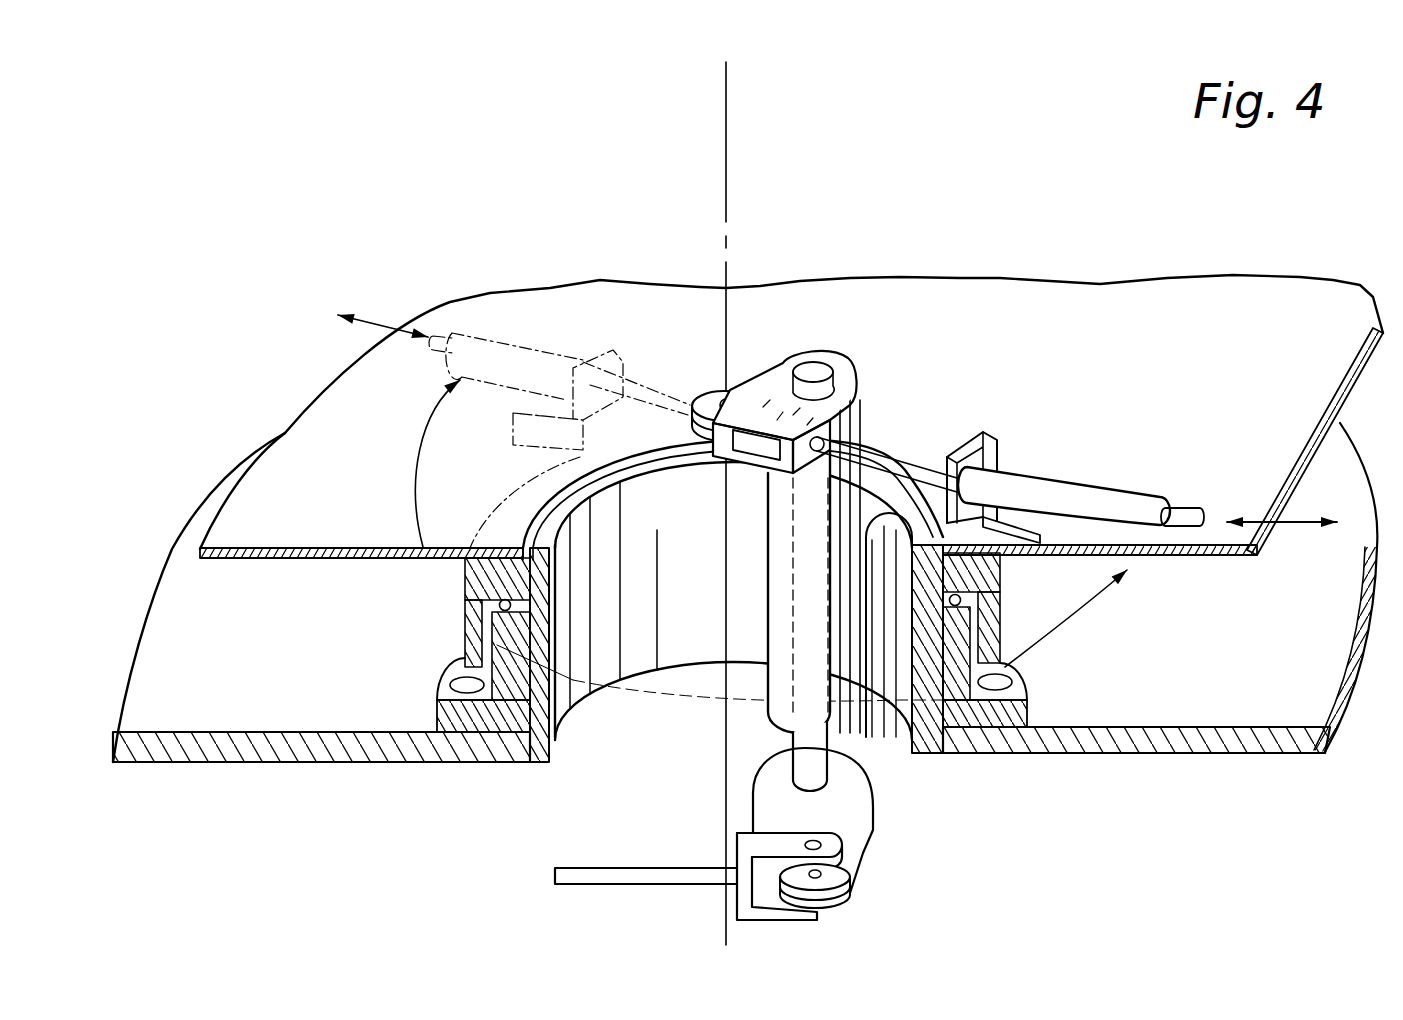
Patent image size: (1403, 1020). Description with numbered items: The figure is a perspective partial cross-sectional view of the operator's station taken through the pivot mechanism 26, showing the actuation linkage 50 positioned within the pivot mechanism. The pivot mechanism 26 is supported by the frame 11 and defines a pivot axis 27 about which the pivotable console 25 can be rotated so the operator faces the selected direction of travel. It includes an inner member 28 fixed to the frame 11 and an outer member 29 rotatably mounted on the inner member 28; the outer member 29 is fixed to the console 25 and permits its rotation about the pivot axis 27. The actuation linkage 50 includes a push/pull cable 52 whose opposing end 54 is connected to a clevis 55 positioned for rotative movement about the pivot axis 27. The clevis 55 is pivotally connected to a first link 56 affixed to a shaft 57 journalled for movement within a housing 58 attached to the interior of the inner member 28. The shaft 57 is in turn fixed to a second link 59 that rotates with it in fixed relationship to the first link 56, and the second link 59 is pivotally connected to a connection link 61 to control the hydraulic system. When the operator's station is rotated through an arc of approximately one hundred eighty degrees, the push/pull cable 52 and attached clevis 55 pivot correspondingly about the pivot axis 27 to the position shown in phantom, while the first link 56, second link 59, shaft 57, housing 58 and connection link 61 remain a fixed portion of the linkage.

The frame 11 is at (1148, 747).
The pivotable console 25 is at (1243, 280).
The pivot mechanism 26 is at (410, 630).
The pivot axis 27 is at (726, 120).
The inner member 28 is at (508, 737).
The outer member 29 is at (466, 578).
The actuation linkage 50 is at (930, 337).
The push/pull cable 52 is at (1183, 510).
The opposing end 54 is at (1003, 468).
The clevis 55 is at (700, 387).
The first link 56 is at (783, 385).
The shaft 57 is at (797, 745).
The housing 58 is at (778, 687).
The second link 59 is at (865, 815).
The connection link 61 is at (667, 868).